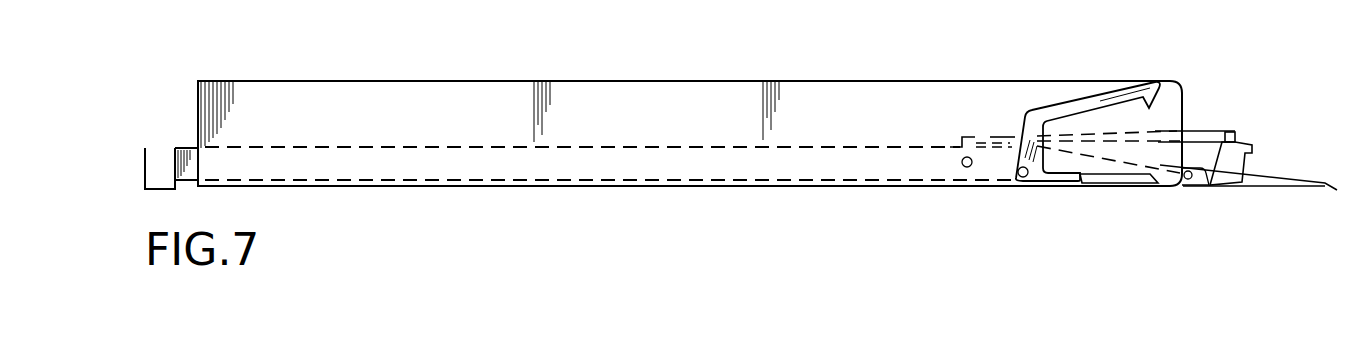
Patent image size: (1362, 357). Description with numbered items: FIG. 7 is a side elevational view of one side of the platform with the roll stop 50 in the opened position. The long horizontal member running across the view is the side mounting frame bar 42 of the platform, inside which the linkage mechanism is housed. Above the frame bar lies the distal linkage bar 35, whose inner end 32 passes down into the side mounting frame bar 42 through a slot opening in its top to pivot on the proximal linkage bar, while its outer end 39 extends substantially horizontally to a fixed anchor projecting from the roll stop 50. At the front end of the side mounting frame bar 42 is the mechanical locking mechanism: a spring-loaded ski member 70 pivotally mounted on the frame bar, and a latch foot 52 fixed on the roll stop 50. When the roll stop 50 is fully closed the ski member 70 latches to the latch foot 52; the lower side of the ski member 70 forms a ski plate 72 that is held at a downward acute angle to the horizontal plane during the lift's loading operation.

The inner end 32 is at (967, 135).
The distal linkage bar 35 is at (992, 140).
The outer end 39 is at (1215, 132).
The side mounting frame bar 42 is at (792, 165).
The roll stop 50 is at (1252, 181).
The latch foot 52 is at (1230, 147).
The ski member 70 is at (1085, 103).
The ski plate 72 is at (1113, 183).